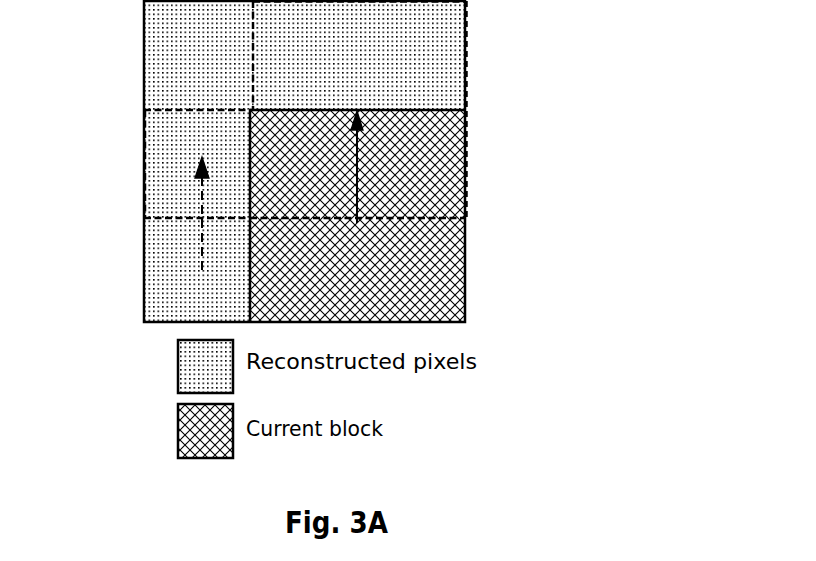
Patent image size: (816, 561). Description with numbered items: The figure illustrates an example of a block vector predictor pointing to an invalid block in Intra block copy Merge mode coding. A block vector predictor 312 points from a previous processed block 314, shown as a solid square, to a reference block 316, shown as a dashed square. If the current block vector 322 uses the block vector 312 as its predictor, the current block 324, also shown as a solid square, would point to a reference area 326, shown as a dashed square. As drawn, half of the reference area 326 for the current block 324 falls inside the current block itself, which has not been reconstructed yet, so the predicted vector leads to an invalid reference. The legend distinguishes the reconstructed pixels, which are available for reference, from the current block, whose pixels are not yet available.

The block vector predictor 312 is at (200, 252).
The previous processed block 314 is at (178, 202).
The reference block 316 is at (205, 96).
The current block vector 322 is at (360, 183).
The current block 324 is at (368, 95).
The reference area 326 is at (391, 218).